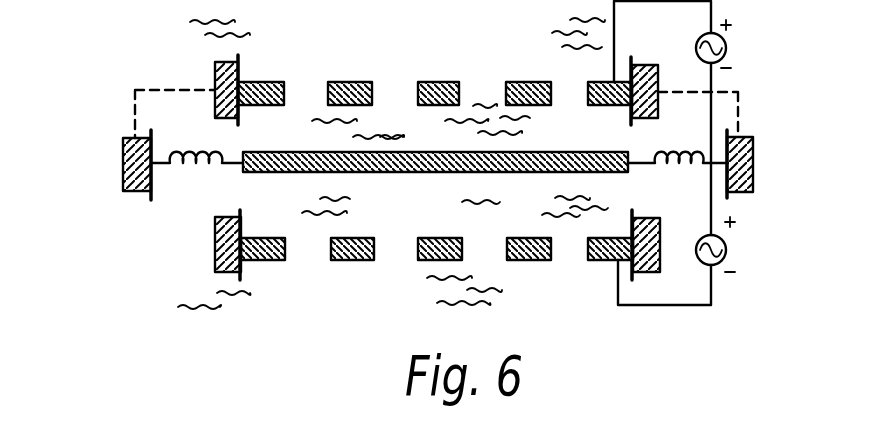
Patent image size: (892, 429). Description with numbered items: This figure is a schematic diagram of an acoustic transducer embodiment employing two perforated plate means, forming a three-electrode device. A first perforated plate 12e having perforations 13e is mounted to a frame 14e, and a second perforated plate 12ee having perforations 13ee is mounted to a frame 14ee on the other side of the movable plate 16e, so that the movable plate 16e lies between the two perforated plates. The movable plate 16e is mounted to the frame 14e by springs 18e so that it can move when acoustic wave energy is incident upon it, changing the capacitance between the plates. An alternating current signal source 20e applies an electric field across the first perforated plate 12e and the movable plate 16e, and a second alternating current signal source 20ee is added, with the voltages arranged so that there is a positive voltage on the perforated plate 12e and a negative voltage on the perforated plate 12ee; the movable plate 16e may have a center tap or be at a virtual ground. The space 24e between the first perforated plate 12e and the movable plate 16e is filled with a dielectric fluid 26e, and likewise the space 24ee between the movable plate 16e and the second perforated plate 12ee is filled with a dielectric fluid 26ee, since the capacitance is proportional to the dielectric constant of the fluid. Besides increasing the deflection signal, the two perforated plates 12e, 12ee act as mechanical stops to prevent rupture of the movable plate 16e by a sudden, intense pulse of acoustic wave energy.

The first perforated plate 12e is at (268, 82).
The perforations 13e is at (305, 90).
The frame 14e is at (215, 79).
The movable plate 16e is at (297, 172).
The springs 18e is at (212, 152).
The AC signal source 20e is at (728, 46).
The space 24e is at (391, 127).
The dielectric fluid 26e is at (485, 105).
The second perforated plate 12ee is at (268, 260).
The perforations 13ee is at (305, 247).
The frame 14ee is at (215, 248).
The second AC signal source 20ee is at (728, 250).
The space 24ee is at (432, 212).
The dielectric fluid 26ee is at (568, 217).